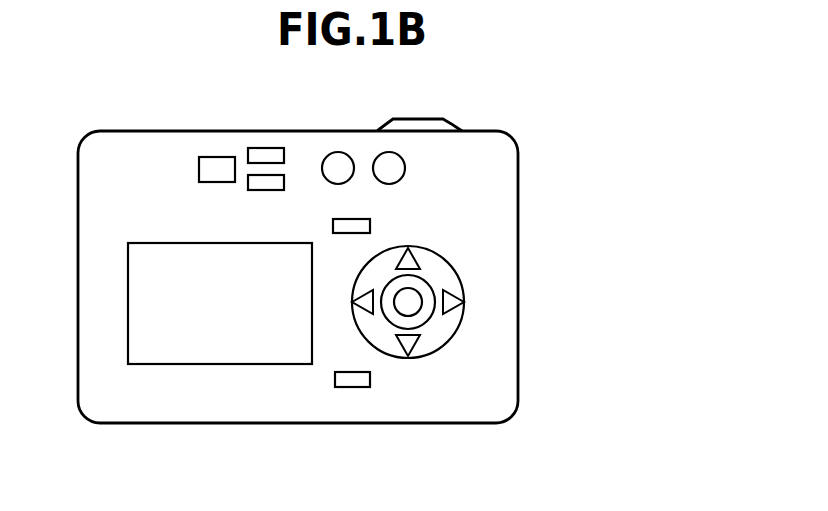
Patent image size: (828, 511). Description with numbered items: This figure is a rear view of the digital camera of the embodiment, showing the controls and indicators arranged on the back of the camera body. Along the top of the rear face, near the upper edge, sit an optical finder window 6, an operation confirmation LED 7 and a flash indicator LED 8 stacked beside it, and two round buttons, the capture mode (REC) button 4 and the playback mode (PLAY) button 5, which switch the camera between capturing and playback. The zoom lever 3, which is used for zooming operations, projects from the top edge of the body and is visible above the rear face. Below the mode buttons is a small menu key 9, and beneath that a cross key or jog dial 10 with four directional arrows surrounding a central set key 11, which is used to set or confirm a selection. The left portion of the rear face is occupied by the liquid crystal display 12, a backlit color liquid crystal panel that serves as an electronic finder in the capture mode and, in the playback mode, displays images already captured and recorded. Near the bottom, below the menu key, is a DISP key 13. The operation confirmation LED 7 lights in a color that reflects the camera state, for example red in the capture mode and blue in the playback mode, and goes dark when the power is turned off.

The zoom lever 3 is at (438, 124).
The capture mode (REC) button 4 is at (388, 162).
The playback mode (PLAY) button 5 is at (338, 162).
The optical finder window 6 is at (214, 172).
The operation confirmation LED 7 is at (263, 156).
The flash indicator LED 8 is at (286, 180).
The menu key 9 is at (359, 224).
The cross key or jog dial 10 is at (440, 327).
The set key 11 is at (410, 298).
The liquid crystal display 12 is at (222, 347).
The DISP key 13 is at (355, 380).